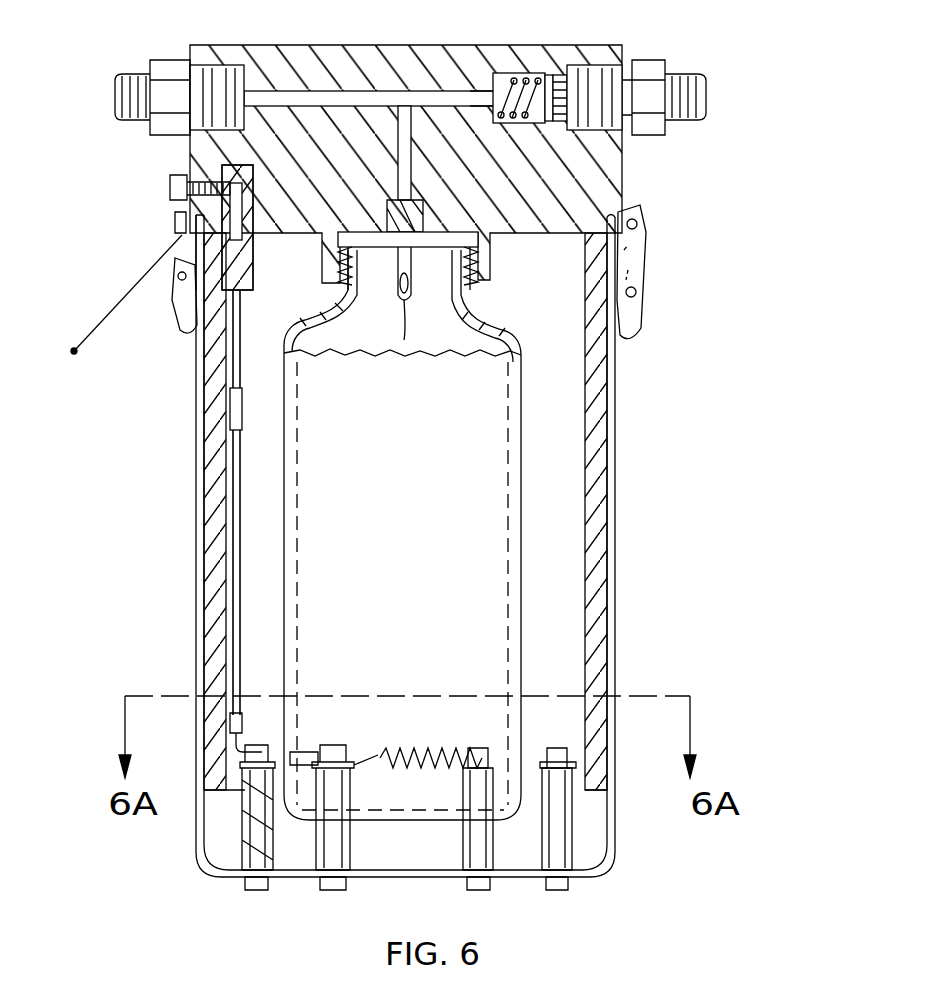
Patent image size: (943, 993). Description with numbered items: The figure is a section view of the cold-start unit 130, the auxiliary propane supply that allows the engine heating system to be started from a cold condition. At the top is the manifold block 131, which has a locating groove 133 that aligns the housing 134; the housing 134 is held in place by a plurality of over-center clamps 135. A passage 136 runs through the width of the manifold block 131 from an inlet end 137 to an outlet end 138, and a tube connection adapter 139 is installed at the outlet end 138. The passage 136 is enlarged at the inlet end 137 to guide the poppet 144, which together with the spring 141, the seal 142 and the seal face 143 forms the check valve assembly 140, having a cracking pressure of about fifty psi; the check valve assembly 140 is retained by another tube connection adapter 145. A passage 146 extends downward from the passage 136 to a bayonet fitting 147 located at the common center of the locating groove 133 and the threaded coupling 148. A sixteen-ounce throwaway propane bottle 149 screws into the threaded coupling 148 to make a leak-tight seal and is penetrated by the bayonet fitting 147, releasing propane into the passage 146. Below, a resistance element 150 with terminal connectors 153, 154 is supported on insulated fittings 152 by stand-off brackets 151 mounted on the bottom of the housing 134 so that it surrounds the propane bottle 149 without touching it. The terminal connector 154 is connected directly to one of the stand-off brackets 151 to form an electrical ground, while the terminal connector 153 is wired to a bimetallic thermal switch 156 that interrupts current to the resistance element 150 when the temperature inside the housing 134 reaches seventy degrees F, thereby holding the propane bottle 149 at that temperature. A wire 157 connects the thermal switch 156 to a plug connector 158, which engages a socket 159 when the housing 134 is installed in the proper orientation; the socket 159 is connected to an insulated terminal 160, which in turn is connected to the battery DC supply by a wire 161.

The cold-start unit 130 is at (766, 182).
The manifold block 131 is at (245, 46).
The locating groove 133 is at (613, 217).
The housing 134 is at (616, 482).
The over-center clamps 135 is at (646, 248).
The passage 136 is at (345, 92).
The inlet end 137 is at (525, 72).
The outlet end 138 is at (190, 68).
The tube connection adapter 139 is at (132, 72).
The check valve assembly 140 is at (539, 68).
The spring 141 is at (500, 72).
The seal 142 is at (598, 62).
The seal face 143 is at (582, 134).
The poppet 144 is at (563, 75).
The tube connection adapter 145 is at (700, 80).
The passage 146 is at (404, 108).
The bayonet fitting 147 is at (405, 300).
The threaded coupling 148 is at (480, 290).
The propane bottle 149 is at (522, 520).
The resistance element 150 is at (522, 752).
The stand-off brackets 151 is at (574, 840).
The insulated fittings 152 is at (563, 752).
The terminal connector 153 is at (262, 750).
The terminal connector 154 is at (335, 755).
The bimetallic thermal switch 156 is at (230, 400).
The wire 157 is at (232, 358).
The plug connector 158 is at (196, 243).
The socket 159 is at (212, 150).
The insulated terminal 160 is at (170, 190).
The wire 161 is at (178, 228).